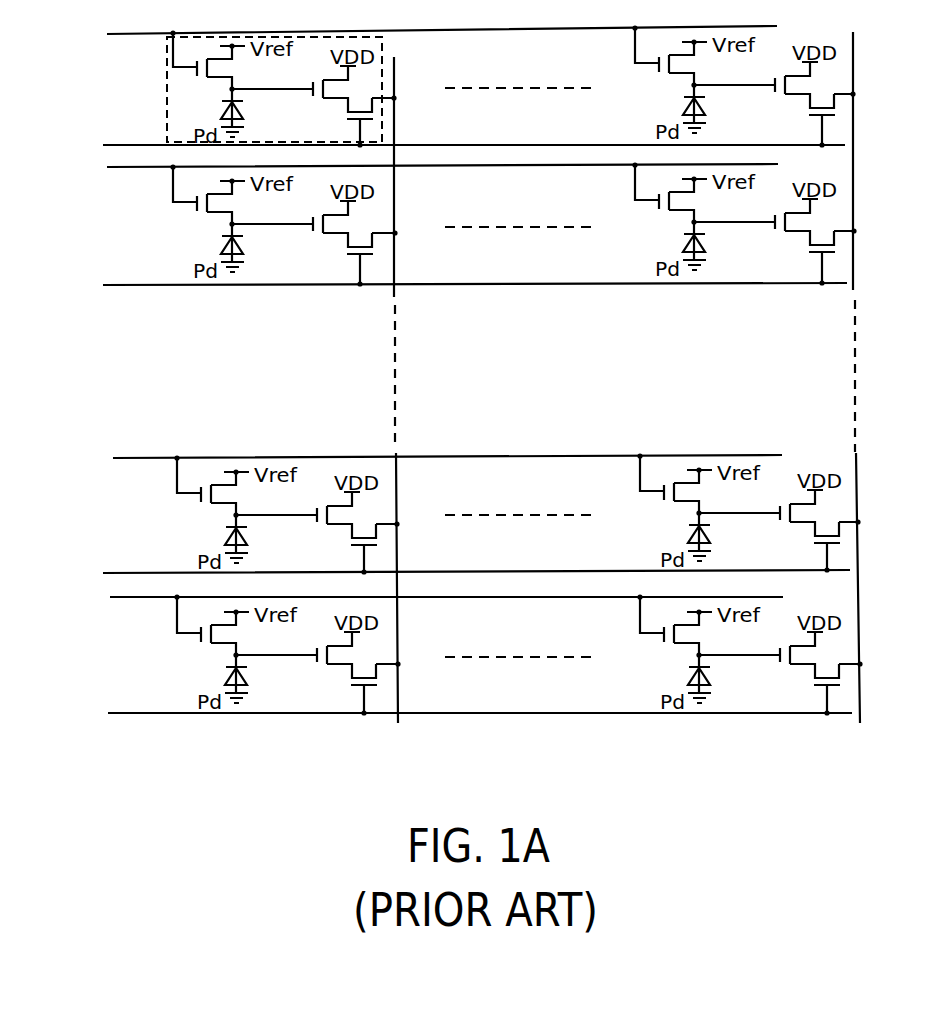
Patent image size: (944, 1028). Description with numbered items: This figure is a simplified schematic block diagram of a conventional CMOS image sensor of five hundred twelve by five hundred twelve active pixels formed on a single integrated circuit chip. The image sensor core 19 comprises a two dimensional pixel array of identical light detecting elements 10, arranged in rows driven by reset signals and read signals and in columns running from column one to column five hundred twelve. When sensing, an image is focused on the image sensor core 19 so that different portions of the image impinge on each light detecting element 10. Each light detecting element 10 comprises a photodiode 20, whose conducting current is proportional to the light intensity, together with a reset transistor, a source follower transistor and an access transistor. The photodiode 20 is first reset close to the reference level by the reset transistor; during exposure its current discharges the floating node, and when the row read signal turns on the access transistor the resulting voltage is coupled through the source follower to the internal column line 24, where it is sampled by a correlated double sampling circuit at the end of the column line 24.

The light detecting element 10 is at (167, 78).
The image sensor core 19 is at (230, 776).
The photodiode 20 is at (241, 110).
The internal column line 24 is at (394, 63).